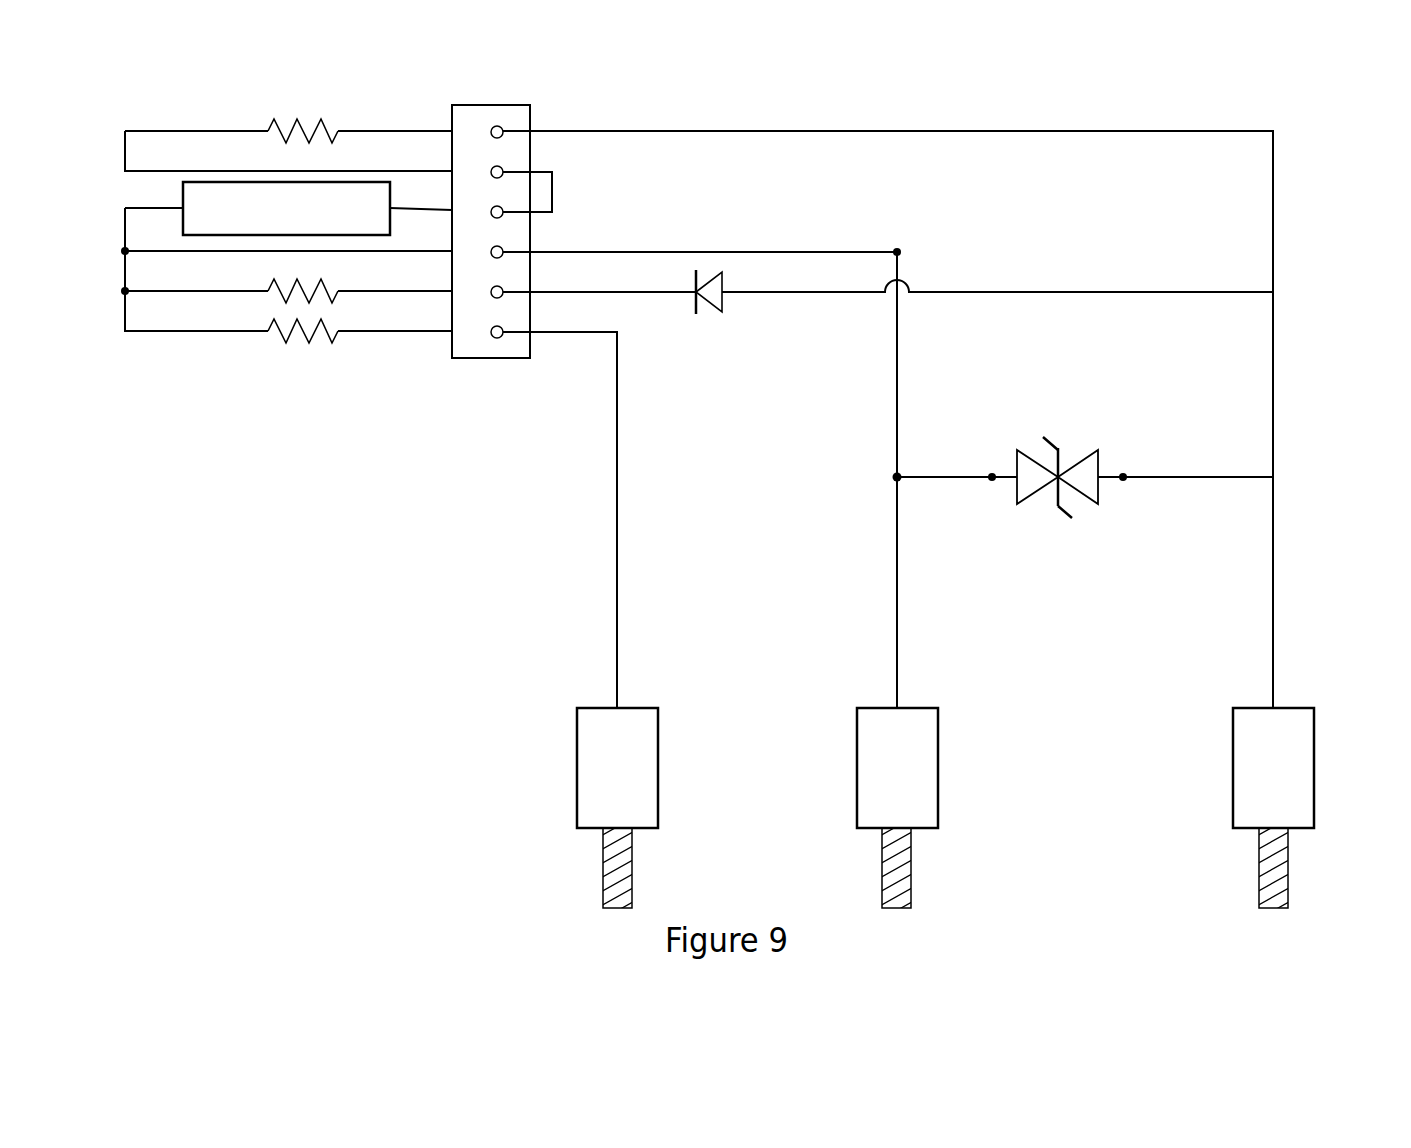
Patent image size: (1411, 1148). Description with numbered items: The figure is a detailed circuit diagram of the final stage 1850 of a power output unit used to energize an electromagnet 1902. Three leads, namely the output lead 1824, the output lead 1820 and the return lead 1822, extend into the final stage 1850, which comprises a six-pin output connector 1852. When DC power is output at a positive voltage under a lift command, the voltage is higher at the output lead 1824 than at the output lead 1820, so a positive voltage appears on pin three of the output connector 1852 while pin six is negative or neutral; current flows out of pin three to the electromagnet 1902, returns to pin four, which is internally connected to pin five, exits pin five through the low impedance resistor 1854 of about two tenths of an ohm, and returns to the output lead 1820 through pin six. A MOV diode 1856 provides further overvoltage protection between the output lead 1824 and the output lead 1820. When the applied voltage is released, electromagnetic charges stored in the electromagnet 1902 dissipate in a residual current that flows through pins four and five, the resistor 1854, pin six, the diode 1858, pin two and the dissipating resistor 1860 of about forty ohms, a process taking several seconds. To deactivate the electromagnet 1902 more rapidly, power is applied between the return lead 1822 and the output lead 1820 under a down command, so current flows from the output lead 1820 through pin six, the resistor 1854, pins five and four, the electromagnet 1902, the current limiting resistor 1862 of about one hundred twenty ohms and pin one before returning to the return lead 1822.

The final stage 1850 is at (1266, 69).
The output connector 1852 is at (490, 105).
The low impedance resistor 1854 is at (300, 120).
The MOV diode 1856 is at (1085, 455).
The diode 1858 is at (713, 303).
The dissipating resistor 1860 is at (322, 290).
The current limiting resistor 1862 is at (308, 341).
The electromagnet 1902 is at (181, 196).
The output lead 1820 is at (1285, 860).
The return lead 1822 is at (628, 858).
The output lead 1824 is at (908, 858).